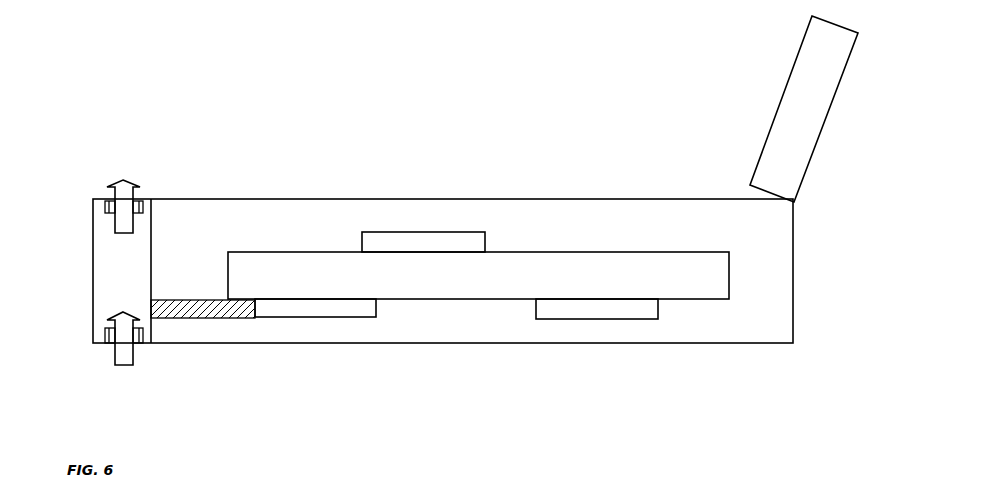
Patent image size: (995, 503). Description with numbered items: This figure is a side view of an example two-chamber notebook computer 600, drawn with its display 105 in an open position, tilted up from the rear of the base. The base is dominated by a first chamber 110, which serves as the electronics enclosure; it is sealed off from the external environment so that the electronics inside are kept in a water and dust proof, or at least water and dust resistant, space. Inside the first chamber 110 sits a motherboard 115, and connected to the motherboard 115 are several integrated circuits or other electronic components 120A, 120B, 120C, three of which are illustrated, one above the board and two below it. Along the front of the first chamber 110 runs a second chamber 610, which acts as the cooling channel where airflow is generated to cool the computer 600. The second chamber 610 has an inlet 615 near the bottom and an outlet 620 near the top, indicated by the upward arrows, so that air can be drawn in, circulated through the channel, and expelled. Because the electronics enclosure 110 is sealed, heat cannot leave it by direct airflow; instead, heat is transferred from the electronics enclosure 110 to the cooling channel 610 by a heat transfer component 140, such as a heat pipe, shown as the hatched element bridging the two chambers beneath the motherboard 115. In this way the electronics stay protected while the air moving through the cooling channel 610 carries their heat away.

The two-chamber notebook computer 600 is at (90, 138).
The first chamber 110 is at (187, 199).
The second chamber 610 is at (87, 278).
The outlet 620 is at (105, 210).
The inlet 615 is at (105, 338).
The heat transfer component 140 is at (193, 318).
The motherboard 115 is at (228, 280).
The electronic component 120A is at (362, 242).
The electronic component 120B is at (376, 305).
The electronic component 120C is at (658, 305).
The display 105 is at (778, 107).